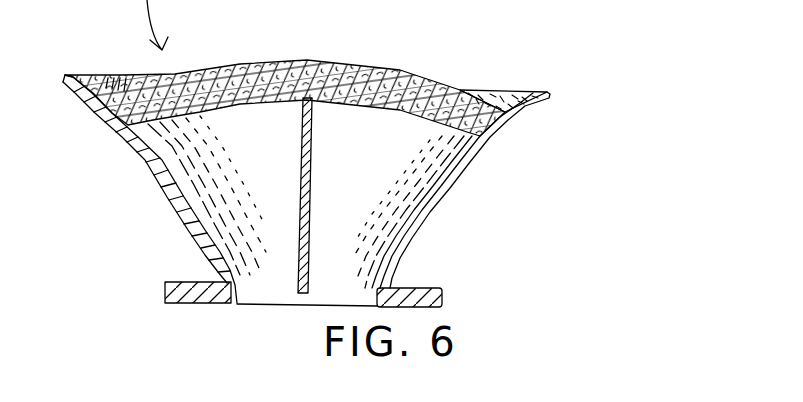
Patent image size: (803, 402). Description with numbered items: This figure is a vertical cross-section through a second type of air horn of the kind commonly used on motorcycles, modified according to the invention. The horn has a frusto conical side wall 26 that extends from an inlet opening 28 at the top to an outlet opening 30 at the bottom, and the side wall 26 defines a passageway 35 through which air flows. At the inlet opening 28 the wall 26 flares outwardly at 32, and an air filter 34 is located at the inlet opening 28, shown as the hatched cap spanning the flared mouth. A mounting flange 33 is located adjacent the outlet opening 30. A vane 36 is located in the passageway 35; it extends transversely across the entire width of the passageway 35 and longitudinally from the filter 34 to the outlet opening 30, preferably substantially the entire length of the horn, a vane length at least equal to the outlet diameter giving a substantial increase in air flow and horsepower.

The frusto conical side wall 26 is at (435, 201).
The inlet opening 28 is at (482, 85).
The outlet opening 30 is at (257, 307).
The outward flare 32 is at (528, 106).
The mounting flange 33 is at (172, 298).
The air filter 34 is at (222, 82).
The passageway 35 is at (185, 155).
The vane 36 is at (307, 195).